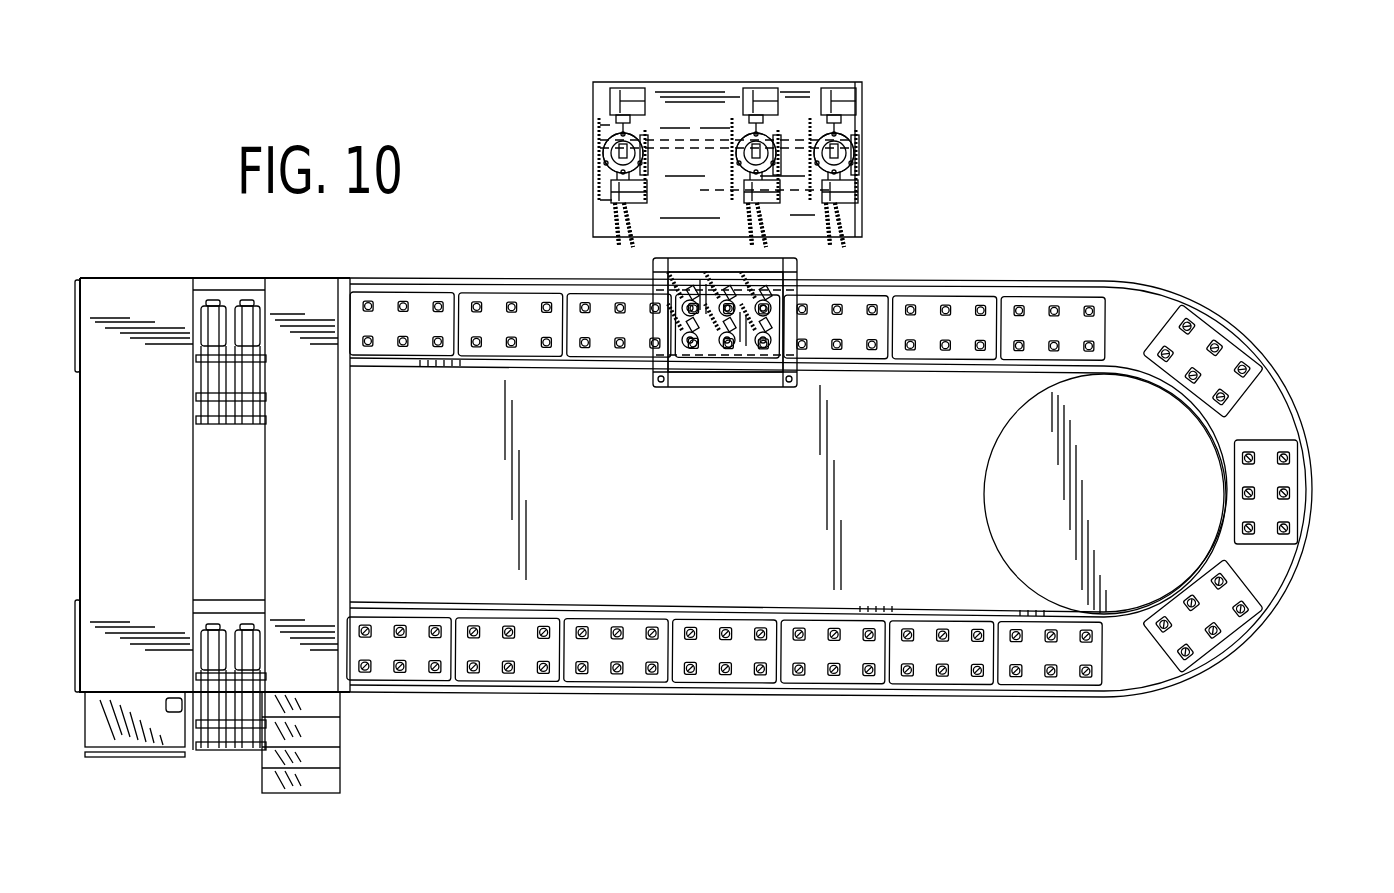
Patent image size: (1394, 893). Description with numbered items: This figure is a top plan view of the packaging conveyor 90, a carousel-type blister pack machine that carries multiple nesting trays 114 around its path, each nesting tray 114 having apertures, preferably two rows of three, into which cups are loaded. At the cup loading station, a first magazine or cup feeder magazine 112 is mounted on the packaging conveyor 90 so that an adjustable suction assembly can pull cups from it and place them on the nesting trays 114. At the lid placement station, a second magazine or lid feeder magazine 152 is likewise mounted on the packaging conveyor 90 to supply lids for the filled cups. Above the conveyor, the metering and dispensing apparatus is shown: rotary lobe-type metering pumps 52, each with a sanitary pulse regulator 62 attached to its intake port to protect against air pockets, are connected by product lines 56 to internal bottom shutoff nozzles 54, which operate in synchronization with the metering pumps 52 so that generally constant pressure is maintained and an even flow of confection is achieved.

The packaging conveyor 90 is at (1220, 76).
The nesting trays 114 is at (475, 292).
The first magazine (cup feeder magazine) 112 is at (196, 365).
The second magazine (lid feeder magazine) 152 is at (224, 750).
The metering pump 52 is at (610, 98).
The sanitary pulse regulator 62 is at (601, 160).
The product line 56 is at (618, 234).
The internal bottom shutoff nozzle 54 is at (690, 349).